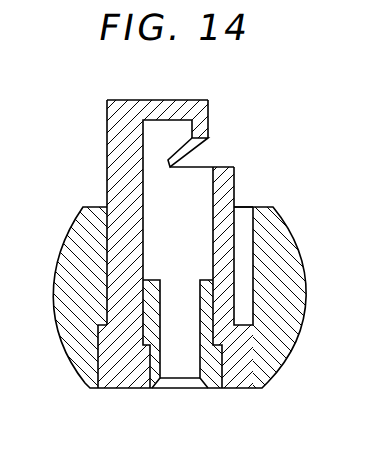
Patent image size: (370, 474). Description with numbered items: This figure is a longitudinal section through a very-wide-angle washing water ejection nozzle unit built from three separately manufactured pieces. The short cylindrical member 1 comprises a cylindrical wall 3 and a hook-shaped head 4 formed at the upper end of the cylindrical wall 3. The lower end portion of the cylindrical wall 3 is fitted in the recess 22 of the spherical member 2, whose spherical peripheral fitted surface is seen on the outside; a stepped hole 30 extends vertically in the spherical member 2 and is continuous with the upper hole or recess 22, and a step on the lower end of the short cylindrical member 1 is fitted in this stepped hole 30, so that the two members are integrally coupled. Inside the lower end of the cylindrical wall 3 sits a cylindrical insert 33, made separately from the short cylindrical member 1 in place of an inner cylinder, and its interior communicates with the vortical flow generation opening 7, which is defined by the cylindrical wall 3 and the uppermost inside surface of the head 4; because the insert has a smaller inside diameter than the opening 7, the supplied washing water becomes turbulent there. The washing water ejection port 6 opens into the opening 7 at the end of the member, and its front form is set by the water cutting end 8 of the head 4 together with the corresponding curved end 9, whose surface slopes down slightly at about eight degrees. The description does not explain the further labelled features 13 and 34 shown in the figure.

The short cylindrical member 1 is at (232, 252).
The spherical member 2 is at (300, 287).
The cylindrical wall 3 is at (142, 234).
The head 4 is at (164, 101).
The washing water ejection port 6 is at (226, 151).
The vortical flow generation opening 7 is at (160, 137).
The water cutting end 8 is at (206, 137).
The curved end 9 is at (234, 167).
The lower face of lip 13 is at (178, 167).
The recess 22 is at (111, 259).
The stepped hole 30 is at (103, 337).
The cylindrical insert 33 is at (214, 386).
The outlet bore 34 is at (200, 350).